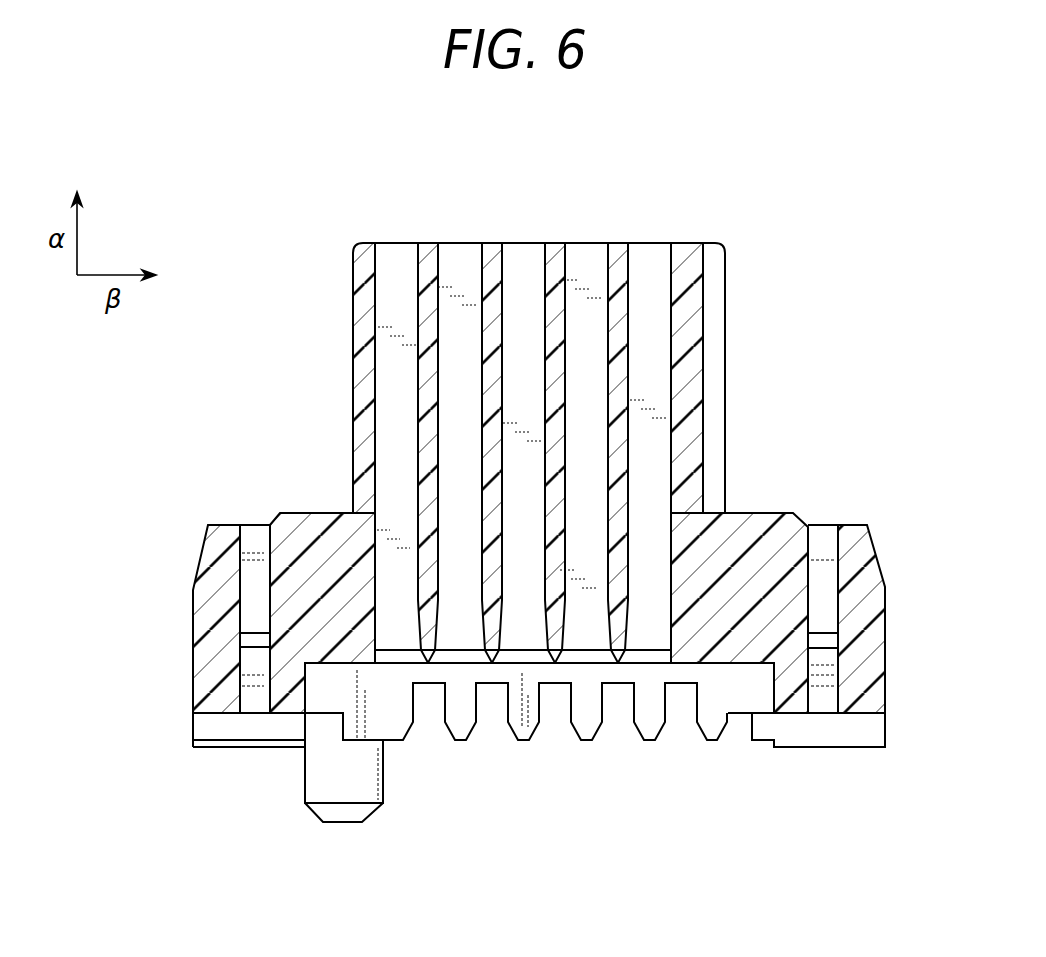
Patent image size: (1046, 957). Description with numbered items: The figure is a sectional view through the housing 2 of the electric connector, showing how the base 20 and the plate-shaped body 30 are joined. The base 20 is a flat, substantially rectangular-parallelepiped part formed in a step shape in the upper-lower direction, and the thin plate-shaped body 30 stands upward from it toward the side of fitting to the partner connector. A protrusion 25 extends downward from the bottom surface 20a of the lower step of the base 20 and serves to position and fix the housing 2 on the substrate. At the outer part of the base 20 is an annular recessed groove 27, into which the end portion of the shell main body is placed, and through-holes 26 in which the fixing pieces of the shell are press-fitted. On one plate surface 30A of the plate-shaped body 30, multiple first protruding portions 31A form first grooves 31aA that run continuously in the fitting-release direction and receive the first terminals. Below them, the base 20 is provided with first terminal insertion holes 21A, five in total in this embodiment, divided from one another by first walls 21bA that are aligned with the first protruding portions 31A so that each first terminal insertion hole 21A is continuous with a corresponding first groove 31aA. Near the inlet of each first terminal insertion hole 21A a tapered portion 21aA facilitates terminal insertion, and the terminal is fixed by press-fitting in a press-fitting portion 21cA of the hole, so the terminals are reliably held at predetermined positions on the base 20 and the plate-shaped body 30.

The housing 2 is at (226, 333).
The base 20 is at (315, 508).
The bottom surface 20a is at (855, 748).
The first terminal insertion hole 21A is at (400, 665).
The tapered portion 21aA is at (645, 650).
The first wall 21bA is at (493, 566).
The press-fitting portion 21cA is at (385, 624).
The protrusion 25 is at (343, 820).
The through-hole 26 is at (820, 695).
The annular recessed groove 27 is at (837, 606).
The plate-shaped body 30 is at (338, 326).
The one plate surface 30A is at (737, 285).
The first protruding portion 31A is at (490, 278).
The first groove 31aA is at (649, 270).